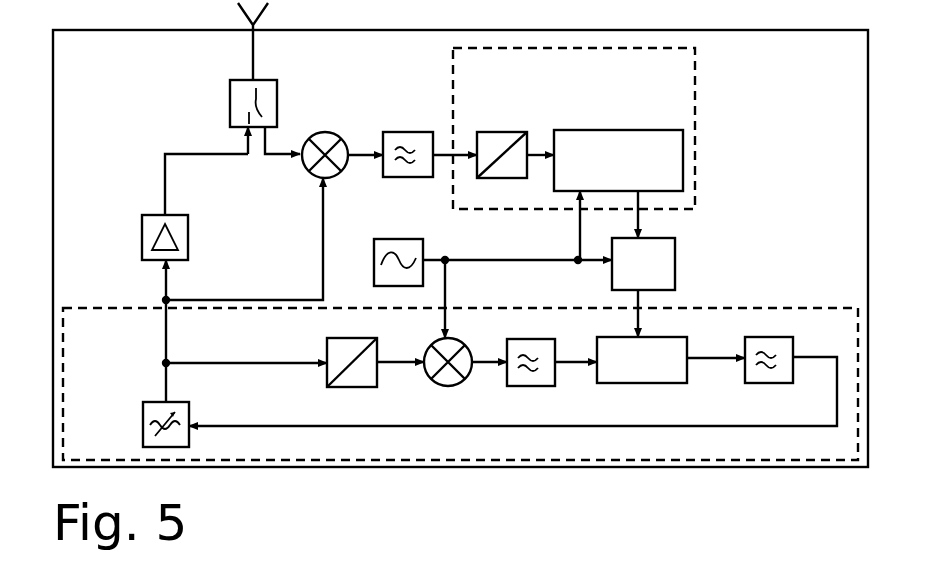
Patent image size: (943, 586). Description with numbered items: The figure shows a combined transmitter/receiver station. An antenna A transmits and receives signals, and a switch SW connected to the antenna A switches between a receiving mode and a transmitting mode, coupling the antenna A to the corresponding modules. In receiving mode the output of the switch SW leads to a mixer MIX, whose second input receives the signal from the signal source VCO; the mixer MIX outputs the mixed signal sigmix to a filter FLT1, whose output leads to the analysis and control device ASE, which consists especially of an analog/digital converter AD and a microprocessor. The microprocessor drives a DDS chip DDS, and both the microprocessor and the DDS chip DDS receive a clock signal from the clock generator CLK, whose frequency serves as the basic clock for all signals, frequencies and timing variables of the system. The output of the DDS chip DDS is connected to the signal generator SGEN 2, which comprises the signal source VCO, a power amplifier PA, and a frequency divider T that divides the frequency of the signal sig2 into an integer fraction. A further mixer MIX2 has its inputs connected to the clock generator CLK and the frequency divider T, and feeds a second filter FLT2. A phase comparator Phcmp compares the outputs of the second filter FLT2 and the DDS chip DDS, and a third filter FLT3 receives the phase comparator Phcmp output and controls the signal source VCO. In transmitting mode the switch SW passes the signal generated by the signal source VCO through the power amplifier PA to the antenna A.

The antenna A is at (264, 41).
The switch SW is at (230, 103).
The mixer MIX is at (324, 143).
The mixed signal sigmix is at (363, 152).
The filter FLT1 is at (406, 142).
The analysis and control device ASE is at (574, 128).
The analog/digital converter AD is at (502, 143).
The clock generator CLK is at (397, 251).
The DDS chip DDS is at (669, 264).
The power amplifier PA is at (143, 237).
The signal sig2 is at (243, 289).
The signal generator SGEN 2 is at (460, 384).
The frequency divider T is at (350, 338).
The signal source VCO is at (132, 424).
The further mixer MIX2 is at (448, 362).
The second filter FLT2 is at (526, 350).
The phase comparator Phcmp is at (642, 375).
The filter FLT3 is at (764, 349).